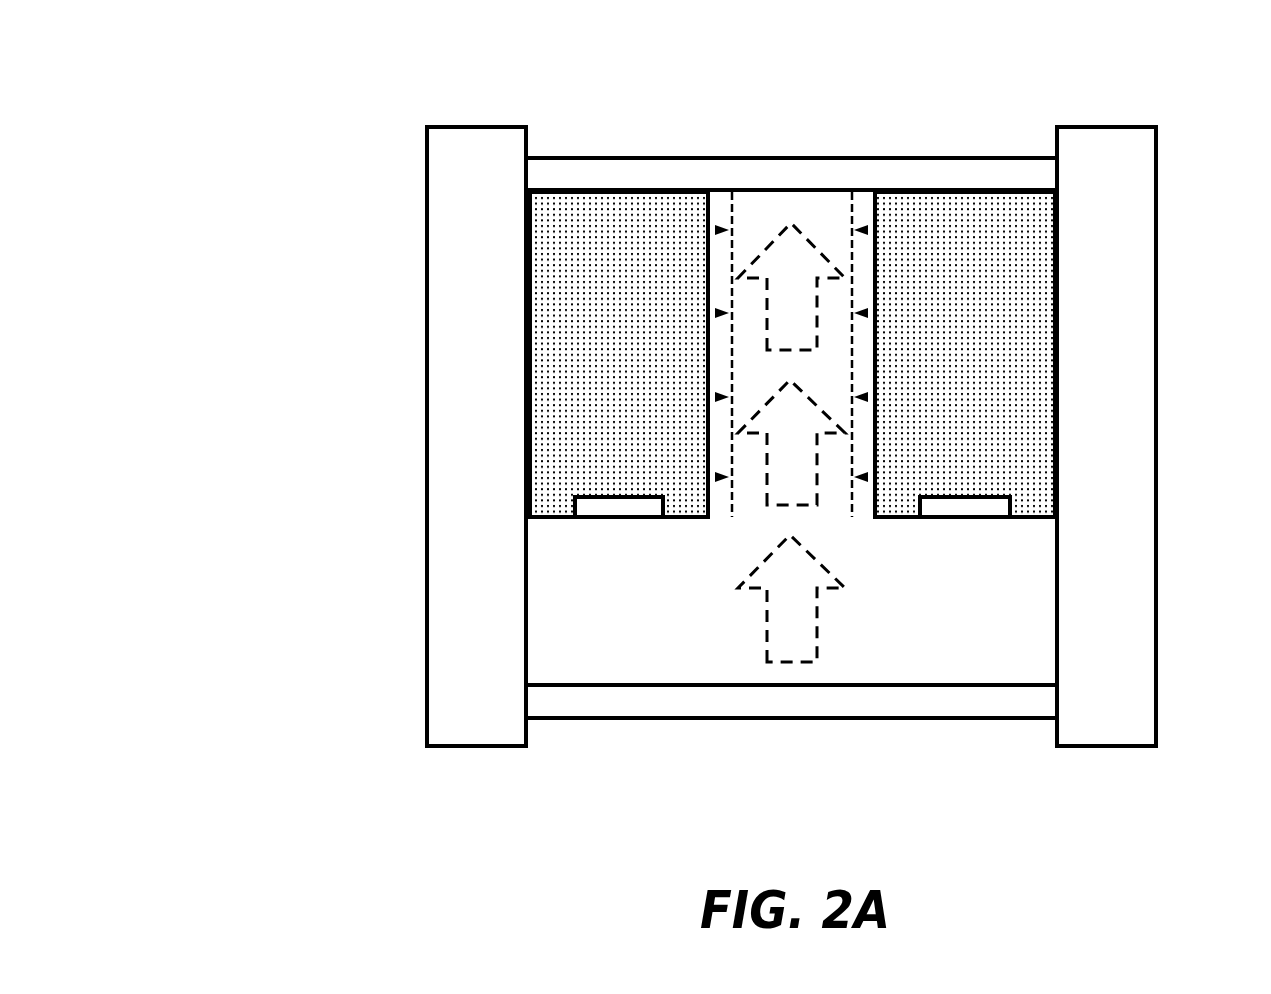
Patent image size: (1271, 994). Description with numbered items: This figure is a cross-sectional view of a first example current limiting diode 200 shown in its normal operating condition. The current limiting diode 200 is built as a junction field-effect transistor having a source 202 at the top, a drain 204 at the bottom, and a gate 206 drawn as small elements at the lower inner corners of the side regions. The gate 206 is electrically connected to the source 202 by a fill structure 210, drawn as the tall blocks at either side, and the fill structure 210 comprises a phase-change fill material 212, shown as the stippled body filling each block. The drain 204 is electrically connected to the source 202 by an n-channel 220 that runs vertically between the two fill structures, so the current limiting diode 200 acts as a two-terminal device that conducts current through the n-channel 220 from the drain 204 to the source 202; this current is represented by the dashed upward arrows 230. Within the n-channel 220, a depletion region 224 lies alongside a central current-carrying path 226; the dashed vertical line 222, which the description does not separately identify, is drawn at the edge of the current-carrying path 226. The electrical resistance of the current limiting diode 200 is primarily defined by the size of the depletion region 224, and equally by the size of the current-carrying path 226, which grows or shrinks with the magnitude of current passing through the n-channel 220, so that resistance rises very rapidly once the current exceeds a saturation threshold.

The current limiting diode 200 is at (97, 46).
The source 202 is at (703, 173).
The drain 204 is at (748, 700).
The gate 206 is at (585, 510).
The fill structure 210 is at (526, 283).
The phase-change fill material 212 is at (676, 230).
The n-channel 220 is at (705, 658).
The flow boundary line 222 is at (732, 510).
The depletion region 224 is at (864, 268).
The current-carrying path 226 is at (800, 210).
The arrows 230 is at (805, 610).